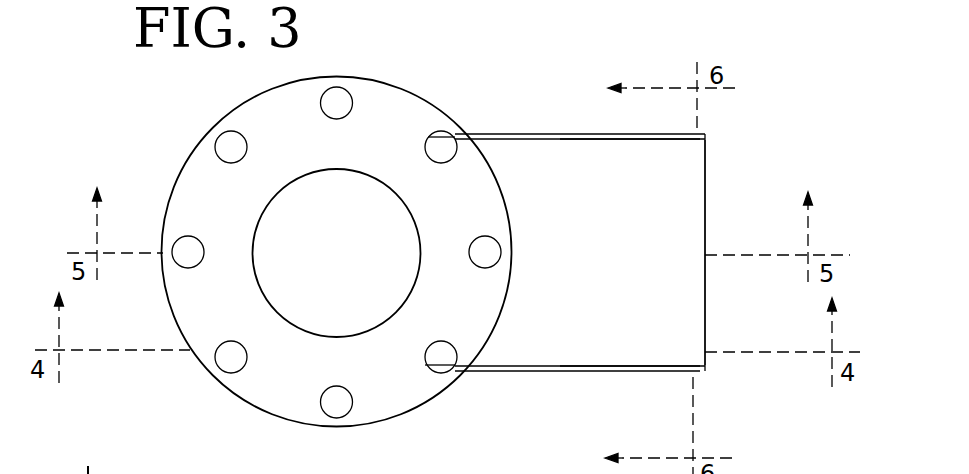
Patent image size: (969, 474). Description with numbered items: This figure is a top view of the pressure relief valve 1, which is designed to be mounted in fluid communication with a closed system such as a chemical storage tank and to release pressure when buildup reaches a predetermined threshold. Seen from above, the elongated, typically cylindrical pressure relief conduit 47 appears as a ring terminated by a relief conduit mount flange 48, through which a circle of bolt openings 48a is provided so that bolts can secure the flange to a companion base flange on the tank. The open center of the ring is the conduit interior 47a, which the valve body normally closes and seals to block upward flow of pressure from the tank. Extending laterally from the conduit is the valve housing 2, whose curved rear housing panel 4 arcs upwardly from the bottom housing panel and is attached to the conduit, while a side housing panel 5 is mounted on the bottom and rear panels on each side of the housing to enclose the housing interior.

The pressure relief valve 1 is at (172, 135).
The valve housing 2 is at (563, 133).
The rear housing panel 4 is at (683, 182).
The side housing panel 5 is at (660, 140).
The pressure relief conduit 47 is at (410, 93).
The conduit interior 47a is at (347, 240).
The relief conduit mount flange 48 is at (425, 117).
The bolt openings 48a is at (343, 90).